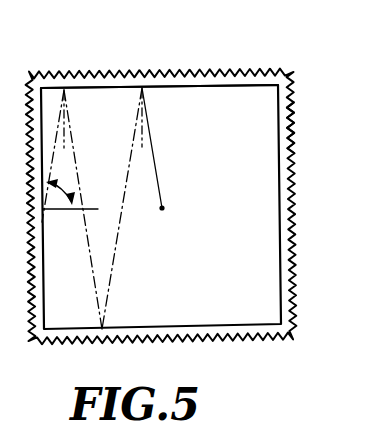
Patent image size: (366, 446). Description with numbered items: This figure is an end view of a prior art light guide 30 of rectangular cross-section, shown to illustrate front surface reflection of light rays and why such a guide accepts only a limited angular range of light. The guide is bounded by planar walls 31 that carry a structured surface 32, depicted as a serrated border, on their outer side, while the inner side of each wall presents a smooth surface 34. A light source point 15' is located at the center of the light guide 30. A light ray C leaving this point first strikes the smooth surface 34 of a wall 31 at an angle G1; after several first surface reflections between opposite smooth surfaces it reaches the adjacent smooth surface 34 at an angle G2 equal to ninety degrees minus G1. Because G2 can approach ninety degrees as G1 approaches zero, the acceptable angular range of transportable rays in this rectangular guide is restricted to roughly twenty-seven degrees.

The prior art light guide 30 is at (162, 66).
The planar wall 31 is at (235, 82).
The structured surface 32 is at (295, 128).
The smooth surface 34 is at (278, 262).
The light source point 15' is at (181, 219).
The angle G1 is at (148, 130).
The angle G2 is at (54, 211).
The light ray C is at (155, 176).